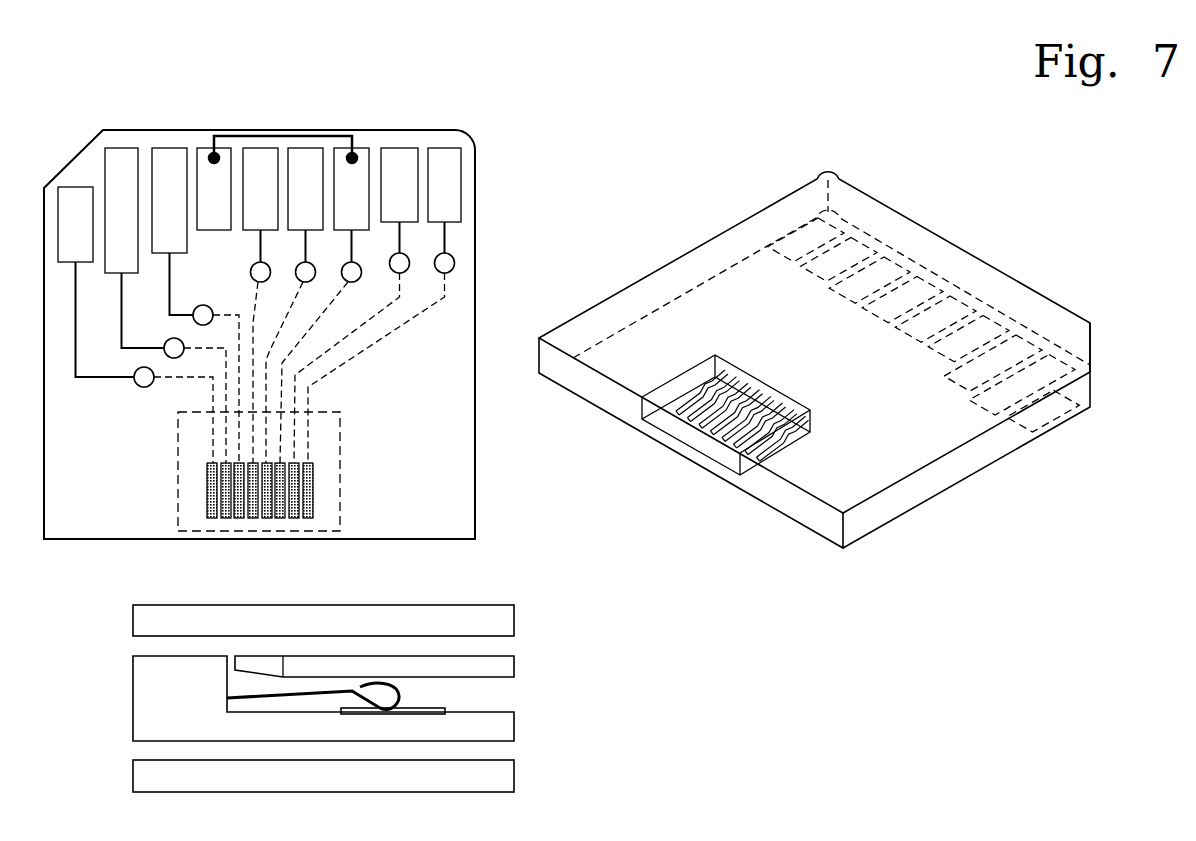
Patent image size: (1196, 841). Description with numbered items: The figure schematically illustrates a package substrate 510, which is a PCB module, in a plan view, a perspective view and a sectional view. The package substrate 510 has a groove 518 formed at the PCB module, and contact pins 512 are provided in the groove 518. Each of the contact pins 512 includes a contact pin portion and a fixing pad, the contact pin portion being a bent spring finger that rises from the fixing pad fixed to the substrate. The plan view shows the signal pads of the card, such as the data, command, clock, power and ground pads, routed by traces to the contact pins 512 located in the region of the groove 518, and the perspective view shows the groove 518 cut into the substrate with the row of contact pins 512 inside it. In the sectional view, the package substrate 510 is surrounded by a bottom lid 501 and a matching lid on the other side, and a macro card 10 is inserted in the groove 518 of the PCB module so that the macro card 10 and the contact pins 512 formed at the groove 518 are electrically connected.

The package substrate 510 is at (383, 130).
The contact pins 512 is at (340, 439).
The groove 518 is at (675, 424).
The bottom lid 501 is at (505, 623).
The macro card 10 is at (505, 668).